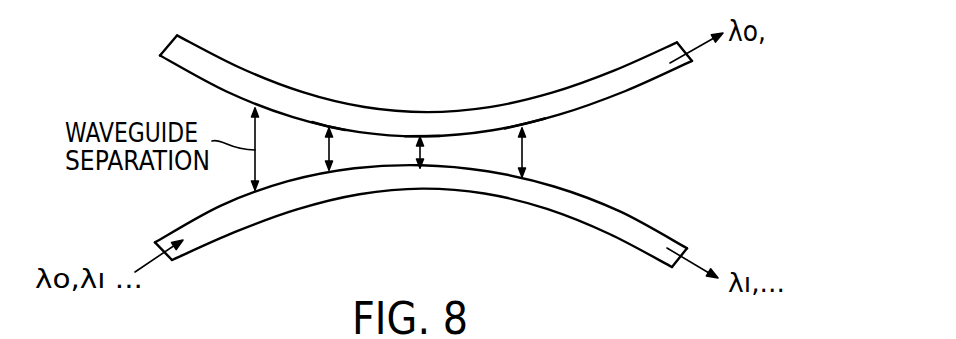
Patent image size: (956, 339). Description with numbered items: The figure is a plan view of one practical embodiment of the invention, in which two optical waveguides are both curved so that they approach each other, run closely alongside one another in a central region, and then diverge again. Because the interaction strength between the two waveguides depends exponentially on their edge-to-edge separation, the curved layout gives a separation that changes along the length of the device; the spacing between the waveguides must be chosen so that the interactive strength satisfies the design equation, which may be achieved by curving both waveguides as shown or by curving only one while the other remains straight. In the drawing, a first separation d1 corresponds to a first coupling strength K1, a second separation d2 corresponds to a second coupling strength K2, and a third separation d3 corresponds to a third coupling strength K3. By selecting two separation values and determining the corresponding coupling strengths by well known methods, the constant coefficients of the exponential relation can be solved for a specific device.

The coupling strength K1 is at (328, 114).
The coupling strength K2 is at (422, 125).
The third coupling region K3 is at (525, 113).
The separation d1 is at (342, 149).
The separation d2 is at (437, 152).
The third waveguide separation distance d3 is at (539, 152).